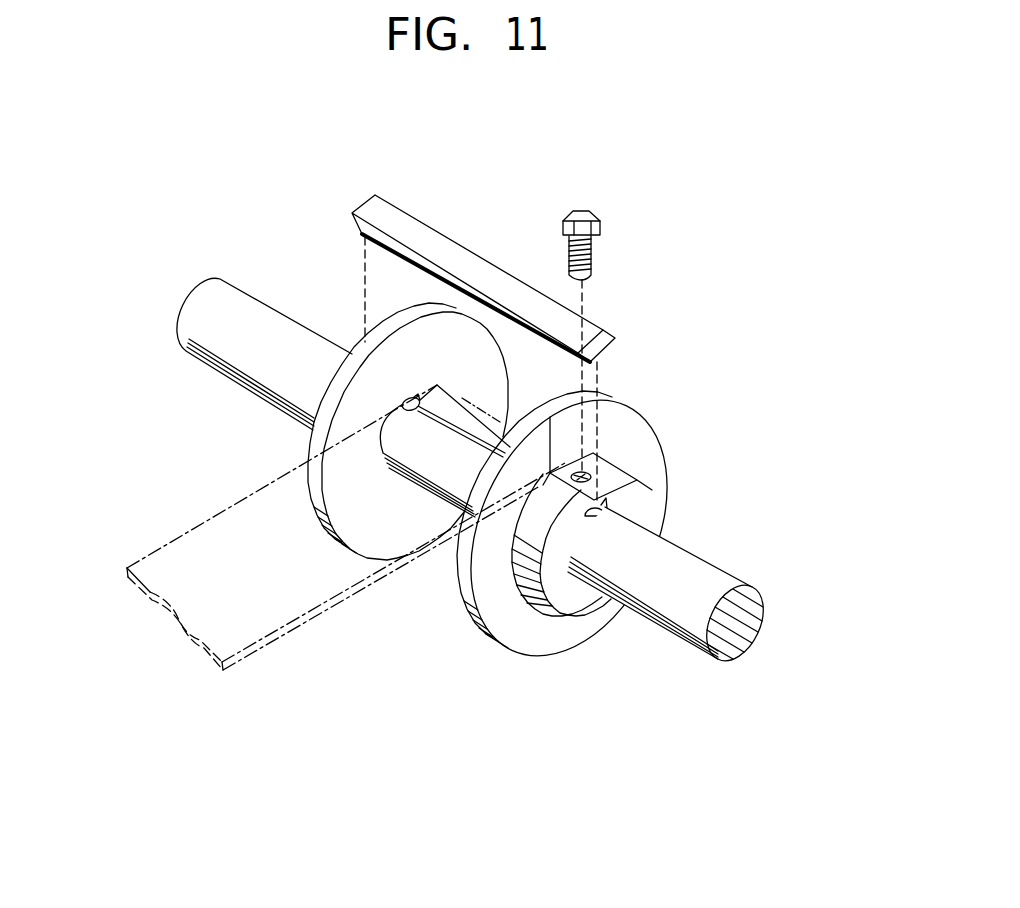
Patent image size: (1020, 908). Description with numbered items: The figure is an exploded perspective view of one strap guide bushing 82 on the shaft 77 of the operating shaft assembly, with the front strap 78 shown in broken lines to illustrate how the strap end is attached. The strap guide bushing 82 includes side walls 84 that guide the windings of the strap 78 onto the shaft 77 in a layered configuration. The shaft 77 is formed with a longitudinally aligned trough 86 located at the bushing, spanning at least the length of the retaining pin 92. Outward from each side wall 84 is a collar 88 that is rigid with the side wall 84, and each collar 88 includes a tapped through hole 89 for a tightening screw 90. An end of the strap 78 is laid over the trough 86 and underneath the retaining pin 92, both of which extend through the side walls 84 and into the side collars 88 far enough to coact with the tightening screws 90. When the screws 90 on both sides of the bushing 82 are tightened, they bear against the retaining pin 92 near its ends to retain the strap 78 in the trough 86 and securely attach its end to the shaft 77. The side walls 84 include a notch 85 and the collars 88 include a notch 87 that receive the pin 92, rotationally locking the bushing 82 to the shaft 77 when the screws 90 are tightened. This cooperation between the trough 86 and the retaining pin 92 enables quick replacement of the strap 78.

The shaft 77 is at (700, 560).
The front strap 78 is at (300, 588).
The strap guide bushing 82 is at (600, 637).
The side walls 84 is at (354, 401).
The notch 85 is at (400, 400).
The trough 86 is at (468, 437).
The notch 87 is at (510, 558).
The collar 88 is at (632, 487).
The tapped through hole 89 is at (612, 507).
The tightening screws 90 is at (598, 220).
The retaining pin 92 is at (427, 227).